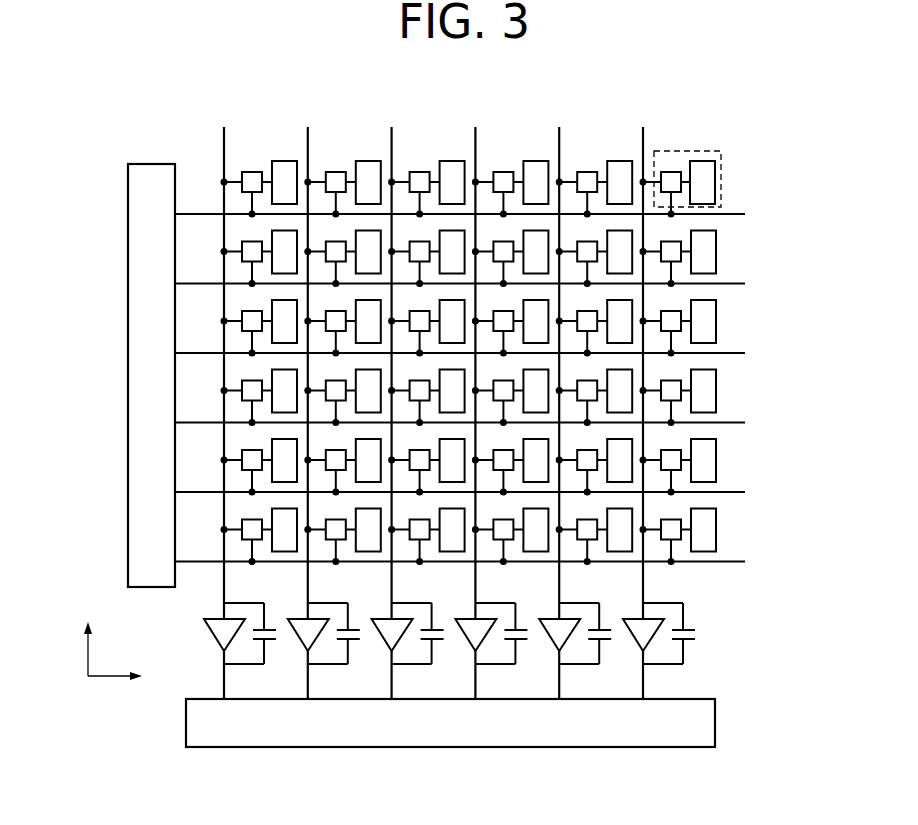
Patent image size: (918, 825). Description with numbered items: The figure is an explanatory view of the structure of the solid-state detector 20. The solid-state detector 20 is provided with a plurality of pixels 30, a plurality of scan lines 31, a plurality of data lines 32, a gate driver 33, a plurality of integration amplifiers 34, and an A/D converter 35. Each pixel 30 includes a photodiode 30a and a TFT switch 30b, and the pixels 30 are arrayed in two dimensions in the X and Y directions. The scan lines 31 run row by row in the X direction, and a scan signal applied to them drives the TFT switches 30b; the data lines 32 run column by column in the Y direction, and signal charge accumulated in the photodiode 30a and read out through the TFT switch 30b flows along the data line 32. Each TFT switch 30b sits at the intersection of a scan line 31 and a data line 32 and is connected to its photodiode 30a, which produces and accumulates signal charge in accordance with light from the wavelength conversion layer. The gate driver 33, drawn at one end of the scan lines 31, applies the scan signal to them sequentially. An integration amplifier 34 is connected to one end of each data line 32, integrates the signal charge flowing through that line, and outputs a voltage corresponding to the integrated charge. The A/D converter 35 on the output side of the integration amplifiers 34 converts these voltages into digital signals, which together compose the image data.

The solid-state detector 20 is at (150, 112).
The pixel 30 is at (712, 148).
The photodiode 30a is at (715, 182).
The TFT switch 30b is at (668, 172).
The scan line 31 is at (727, 214).
The data line 32 is at (308, 150).
The gate driver 33 is at (128, 373).
The integration amplifier 34 is at (708, 610).
The A/D converter 35 is at (715, 720).